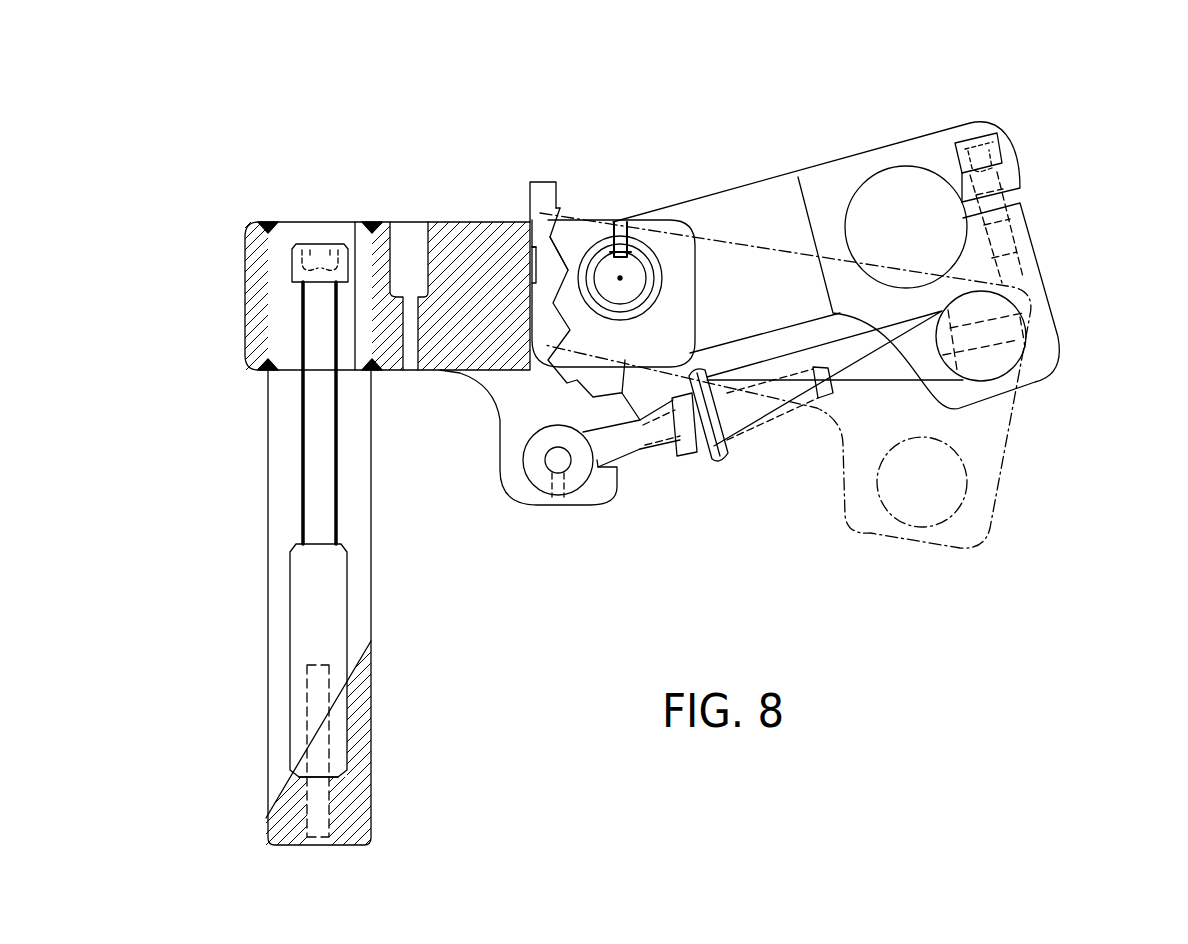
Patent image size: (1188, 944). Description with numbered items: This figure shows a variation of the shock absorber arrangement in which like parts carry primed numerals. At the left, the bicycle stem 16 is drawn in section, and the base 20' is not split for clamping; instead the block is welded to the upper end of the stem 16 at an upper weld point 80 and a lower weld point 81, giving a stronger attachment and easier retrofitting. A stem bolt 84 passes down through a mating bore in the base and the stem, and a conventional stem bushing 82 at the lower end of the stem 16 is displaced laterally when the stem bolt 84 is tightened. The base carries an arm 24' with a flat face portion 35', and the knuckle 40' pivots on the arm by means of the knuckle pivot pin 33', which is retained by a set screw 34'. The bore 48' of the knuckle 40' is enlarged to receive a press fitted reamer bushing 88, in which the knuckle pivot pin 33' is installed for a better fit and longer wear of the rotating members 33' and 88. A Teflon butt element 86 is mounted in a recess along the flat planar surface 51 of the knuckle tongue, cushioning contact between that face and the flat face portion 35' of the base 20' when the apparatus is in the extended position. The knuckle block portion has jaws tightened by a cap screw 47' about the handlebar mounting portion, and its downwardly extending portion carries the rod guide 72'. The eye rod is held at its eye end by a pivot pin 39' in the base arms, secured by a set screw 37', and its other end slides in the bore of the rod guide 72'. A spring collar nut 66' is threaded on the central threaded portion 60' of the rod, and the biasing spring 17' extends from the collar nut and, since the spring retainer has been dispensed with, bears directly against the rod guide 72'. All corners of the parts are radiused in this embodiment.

The stem 16 is at (266, 566).
The biasing spring 17' is at (826, 408).
The base 20' is at (314, 296).
The arm 24' is at (644, 223).
The knuckle pivot pin 33' is at (681, 278).
The set screw 34' is at (627, 162).
The flat face portion 35' is at (528, 202).
The set screw 37' is at (568, 496).
The pivot pin 39' is at (567, 367).
The knuckle 40' is at (836, 213).
The cap screw 47' is at (999, 161).
The bore 48' is at (680, 173).
The flat planar surface 51 is at (535, 290).
The central threaded portion 60' is at (785, 380).
The spring collar nut 66' is at (736, 459).
The rod guide 72' is at (1046, 347).
The upper weld point 80 is at (270, 222).
The lower weld point 81 is at (264, 376).
The stem bushing 82 is at (371, 755).
The stem bolt 84 is at (322, 244).
The Teflon butt element 86 is at (575, 230).
The reamer bushing 88 is at (658, 264).